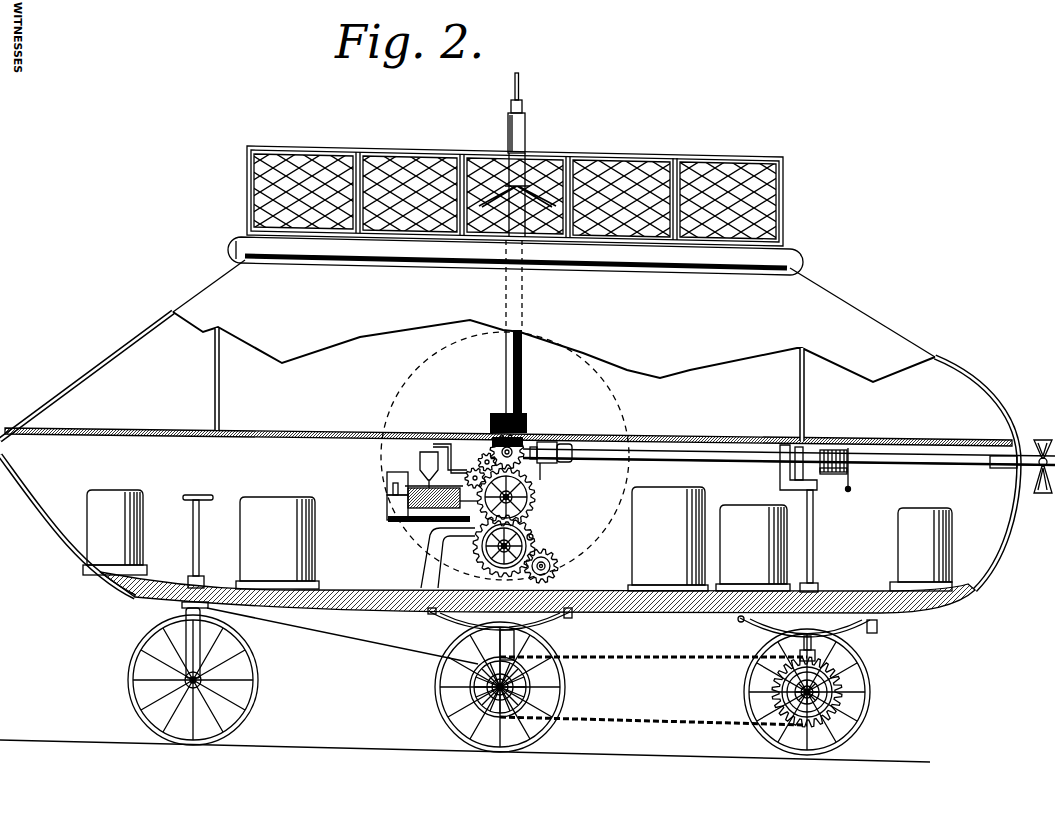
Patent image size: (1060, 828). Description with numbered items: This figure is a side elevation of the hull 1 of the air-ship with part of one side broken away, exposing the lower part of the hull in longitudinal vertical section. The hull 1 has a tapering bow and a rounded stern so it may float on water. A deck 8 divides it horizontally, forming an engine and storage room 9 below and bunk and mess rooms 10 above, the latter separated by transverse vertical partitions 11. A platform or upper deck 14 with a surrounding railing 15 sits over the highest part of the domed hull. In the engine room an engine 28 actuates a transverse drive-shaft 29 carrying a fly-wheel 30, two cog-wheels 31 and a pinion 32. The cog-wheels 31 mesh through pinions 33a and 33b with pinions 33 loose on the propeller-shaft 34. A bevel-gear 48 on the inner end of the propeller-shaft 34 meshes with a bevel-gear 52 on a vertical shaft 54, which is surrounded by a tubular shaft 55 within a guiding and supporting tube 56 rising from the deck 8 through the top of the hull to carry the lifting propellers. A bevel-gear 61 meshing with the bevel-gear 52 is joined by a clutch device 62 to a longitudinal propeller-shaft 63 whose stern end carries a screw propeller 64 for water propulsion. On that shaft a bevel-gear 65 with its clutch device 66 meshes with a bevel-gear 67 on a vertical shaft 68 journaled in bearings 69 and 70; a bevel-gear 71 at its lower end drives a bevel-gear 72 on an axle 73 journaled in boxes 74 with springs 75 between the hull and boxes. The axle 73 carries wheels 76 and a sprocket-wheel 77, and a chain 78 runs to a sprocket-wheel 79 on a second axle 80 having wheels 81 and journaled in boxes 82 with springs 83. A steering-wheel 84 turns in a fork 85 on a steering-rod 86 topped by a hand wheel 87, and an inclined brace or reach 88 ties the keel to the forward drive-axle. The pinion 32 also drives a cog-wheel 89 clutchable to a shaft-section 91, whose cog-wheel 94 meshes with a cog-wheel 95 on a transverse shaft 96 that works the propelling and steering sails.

The hull 1 is at (509, 428).
The deck 8 is at (508, 421).
The engine and storage room 9 is at (537, 532).
The bunk and mess rooms 10 is at (554, 347).
The transverse vertical partitions 11 is at (215, 378).
The platform or upper deck 14 is at (795, 240).
The railing 15 is at (783, 200).
The engine 28 is at (390, 505).
The drive-shaft 29 is at (539, 497).
The fly-wheel 30 is at (506, 544).
The cog-wheels 31 is at (521, 489).
The pinion 32 is at (522, 503).
The pinions 33 is at (523, 438).
The pinion 33a is at (478, 458).
The pinion 33b is at (466, 472).
The propeller-shaft 34 is at (513, 438).
The bevel-gear 48 is at (490, 424).
The bevel-gear 52 is at (553, 462).
The vertical shaft 54 is at (519, 78).
The tubular shaft 55 is at (511, 104).
The guiding and supporting tube 56 is at (525, 132).
The bevel-gear 61 is at (546, 442).
The clutch device 62 is at (563, 445).
The longitudinal propeller-shaft 63 is at (647, 465).
The screw propeller 64 is at (1024, 479).
The bevel-gear 65 is at (830, 450).
The clutch device 66 is at (851, 470).
The bevel-gear 67 is at (822, 474).
The shaft 68 is at (813, 540).
The bearing 69 is at (794, 478).
The bearing 70 is at (824, 576).
The bevel-gear 71 is at (820, 688).
The bevel-gear 72 is at (842, 693).
The axle 73 is at (832, 700).
The boxes 74 is at (816, 655).
The springs 75 is at (760, 626).
The wheels 76 is at (856, 722).
The sprocket-wheel 77 is at (860, 735).
The chain 78 is at (653, 691).
The sprocket-wheel 79 is at (516, 692).
The axle 80 is at (531, 679).
The wheels 81 is at (436, 699).
The boxes 82 is at (500, 645).
The springs 83 is at (433, 617).
The steering-wheel 84 is at (135, 665).
The fork 85 is at (184, 610).
The steering-rod 86 is at (193, 540).
The wheel 87 is at (198, 483).
The inclined brace or reach 88 is at (356, 640).
The cog-wheel 89 is at (484, 538).
The shaft-section 91 is at (485, 553).
The cog-wheel 94 is at (533, 537).
The cog-wheel 95 is at (558, 573).
The shaft 96 is at (556, 560).